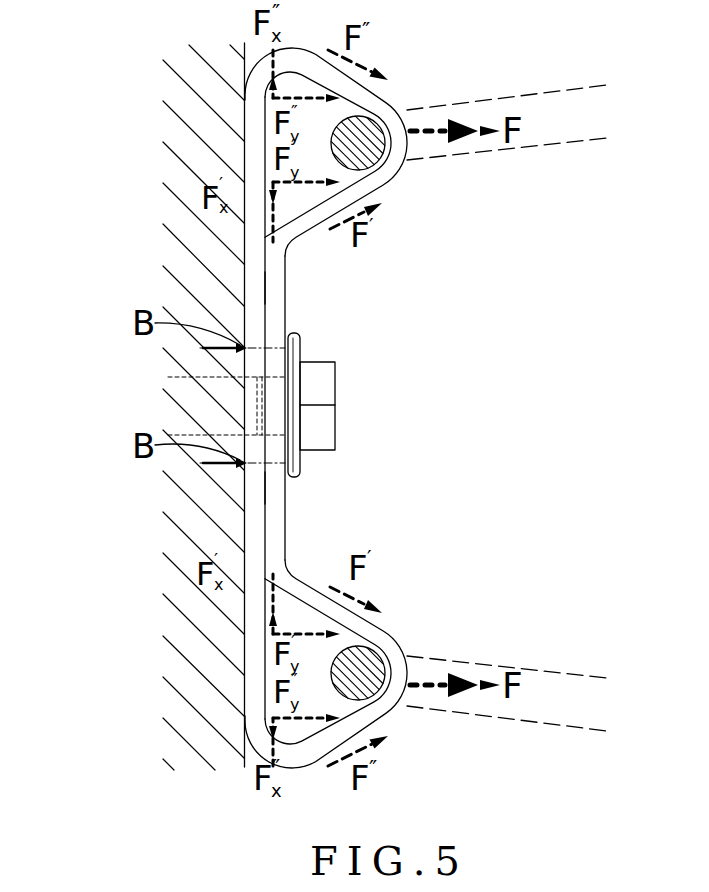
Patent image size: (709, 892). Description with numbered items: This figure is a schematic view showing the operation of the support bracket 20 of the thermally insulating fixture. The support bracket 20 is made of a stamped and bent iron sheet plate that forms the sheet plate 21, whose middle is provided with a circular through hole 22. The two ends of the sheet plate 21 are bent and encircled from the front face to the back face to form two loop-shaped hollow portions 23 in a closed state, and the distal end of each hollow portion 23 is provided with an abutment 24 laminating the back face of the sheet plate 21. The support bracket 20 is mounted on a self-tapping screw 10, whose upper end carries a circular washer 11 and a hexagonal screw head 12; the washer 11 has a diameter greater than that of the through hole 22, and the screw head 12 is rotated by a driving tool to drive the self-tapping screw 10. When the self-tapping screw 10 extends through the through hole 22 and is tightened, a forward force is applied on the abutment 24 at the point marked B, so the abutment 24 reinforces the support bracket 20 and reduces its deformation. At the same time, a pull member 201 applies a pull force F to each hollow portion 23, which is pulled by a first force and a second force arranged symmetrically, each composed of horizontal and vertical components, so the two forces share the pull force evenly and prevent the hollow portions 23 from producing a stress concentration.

The self-tapping screw 10 is at (172, 365).
The circular washer 11 is at (300, 453).
The hexagonal screw head 12 is at (327, 400).
The support bracket 20 is at (315, 401).
The sheet plate 21 is at (283, 300).
The through hole 22 is at (291, 334).
The hollow portions 23 is at (386, 190).
The abutment 24 is at (267, 288).
The pull member 201 is at (328, 168).